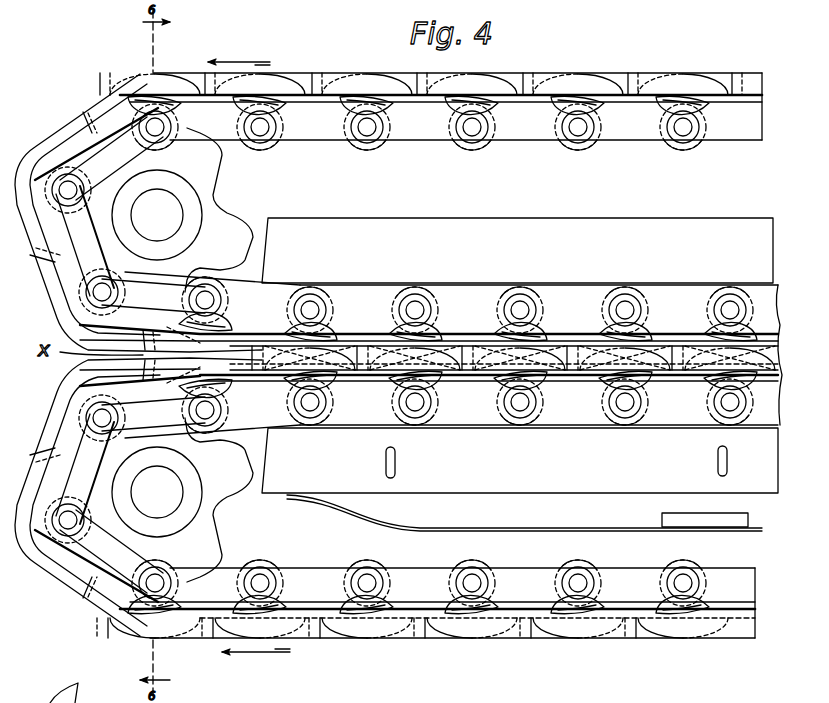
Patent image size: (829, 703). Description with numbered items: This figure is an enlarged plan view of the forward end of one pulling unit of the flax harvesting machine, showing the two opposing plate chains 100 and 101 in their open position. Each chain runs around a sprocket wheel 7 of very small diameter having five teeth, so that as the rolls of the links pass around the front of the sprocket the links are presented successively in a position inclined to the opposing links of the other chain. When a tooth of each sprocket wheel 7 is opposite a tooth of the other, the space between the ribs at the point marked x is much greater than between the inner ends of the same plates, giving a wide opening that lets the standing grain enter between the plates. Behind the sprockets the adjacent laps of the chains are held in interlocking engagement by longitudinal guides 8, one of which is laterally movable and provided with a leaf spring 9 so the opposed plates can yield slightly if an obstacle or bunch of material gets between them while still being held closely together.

The sprocket wheel 7 is at (210, 207).
The guide 8 is at (520, 355).
The leaf spring 9 is at (637, 528).
The opposing chain 100 is at (408, 582).
The opposing chain 101 is at (432, 133).